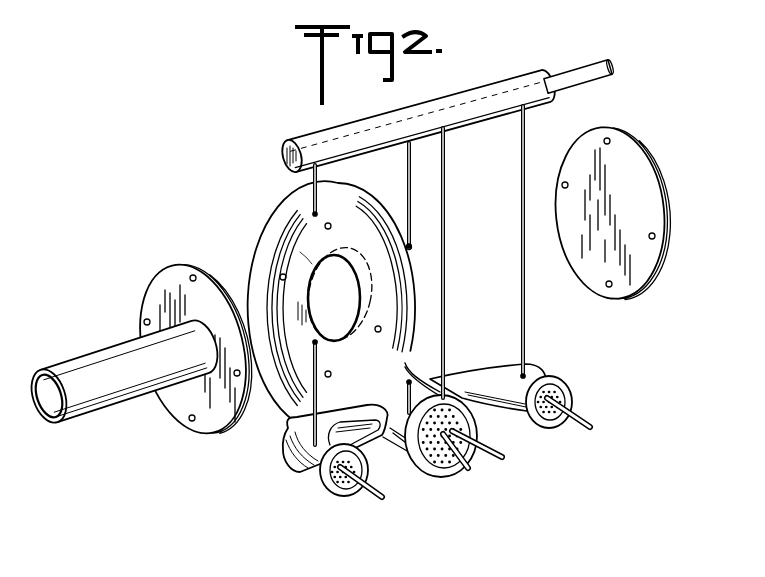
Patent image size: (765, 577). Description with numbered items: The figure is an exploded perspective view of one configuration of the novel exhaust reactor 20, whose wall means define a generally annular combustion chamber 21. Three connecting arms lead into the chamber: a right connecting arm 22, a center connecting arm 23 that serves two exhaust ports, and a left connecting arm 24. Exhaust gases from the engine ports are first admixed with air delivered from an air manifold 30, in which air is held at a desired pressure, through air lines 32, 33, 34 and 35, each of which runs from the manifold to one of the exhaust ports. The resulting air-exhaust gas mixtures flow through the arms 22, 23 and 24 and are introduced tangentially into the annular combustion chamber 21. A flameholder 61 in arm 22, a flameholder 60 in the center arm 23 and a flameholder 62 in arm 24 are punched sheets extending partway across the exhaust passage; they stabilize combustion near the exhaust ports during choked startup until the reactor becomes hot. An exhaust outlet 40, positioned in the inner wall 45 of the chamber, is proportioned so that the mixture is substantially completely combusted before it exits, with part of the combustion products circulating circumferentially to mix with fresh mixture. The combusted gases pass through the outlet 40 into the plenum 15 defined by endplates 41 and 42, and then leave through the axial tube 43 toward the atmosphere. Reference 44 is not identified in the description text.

The plenum 15 is at (322, 297).
The reactor 20 is at (281, 364).
The annular combustion chamber 21 is at (357, 205).
The right connecting arm 22 is at (292, 466).
The center connecting arm 23 is at (405, 467).
The left connecting arm 24 is at (500, 357).
The air manifold 30 is at (385, 117).
The air line 32 is at (313, 177).
The air line 33 is at (408, 205).
The air line 34 is at (447, 215).
The air line 35 is at (522, 215).
The exhaust outlet 40 is at (310, 263).
The endplate 41 is at (165, 273).
The endplate 42 is at (635, 182).
The axial tube 43 is at (82, 355).
The cord end 44 is at (410, 256).
The inner wall 45 is at (334, 298).
The flameholder 60 is at (458, 453).
The flameholder 61 is at (328, 493).
The flameholder 62 is at (558, 380).